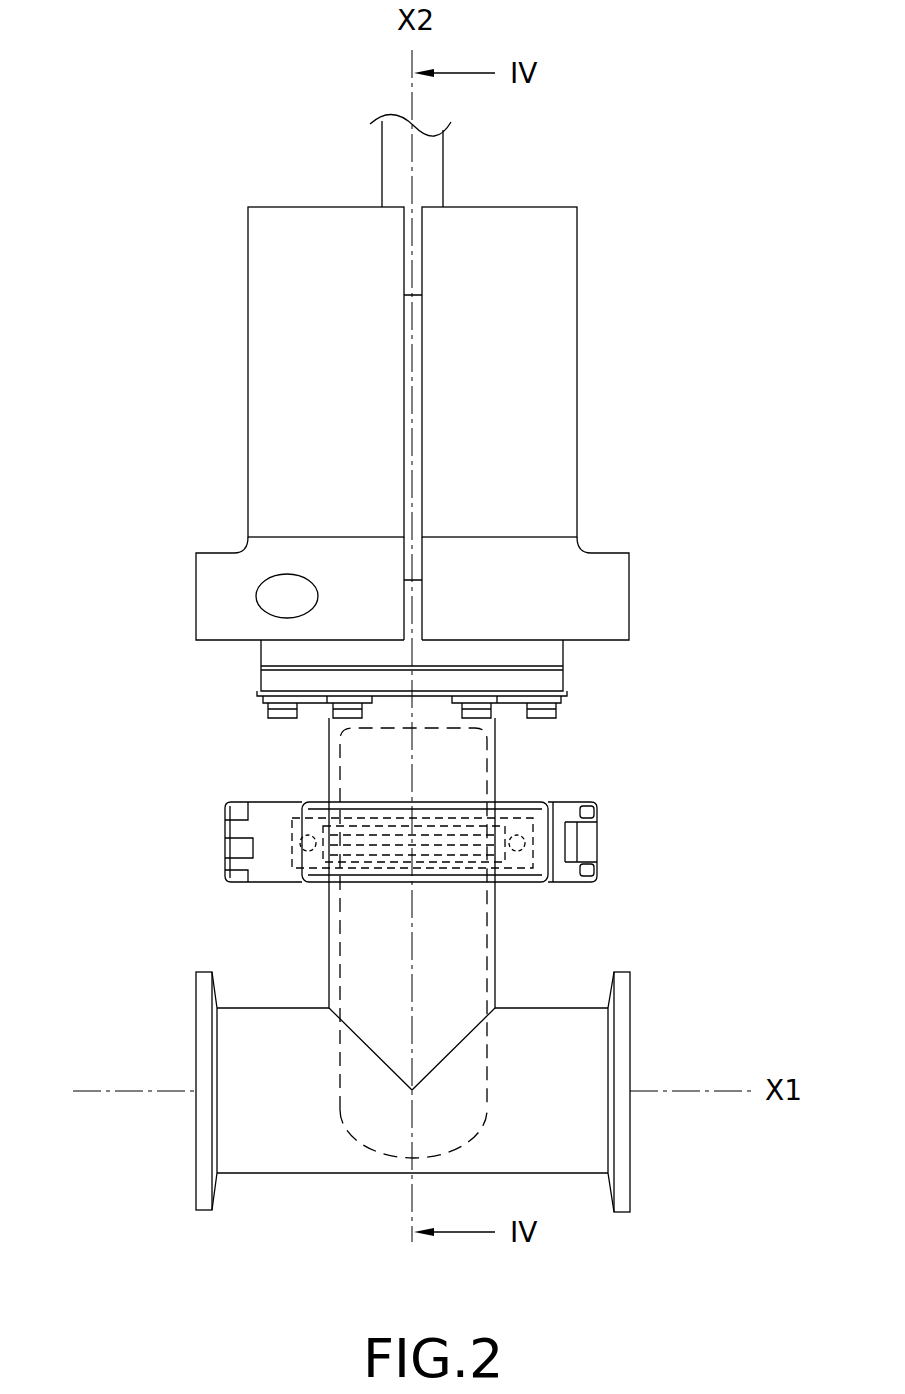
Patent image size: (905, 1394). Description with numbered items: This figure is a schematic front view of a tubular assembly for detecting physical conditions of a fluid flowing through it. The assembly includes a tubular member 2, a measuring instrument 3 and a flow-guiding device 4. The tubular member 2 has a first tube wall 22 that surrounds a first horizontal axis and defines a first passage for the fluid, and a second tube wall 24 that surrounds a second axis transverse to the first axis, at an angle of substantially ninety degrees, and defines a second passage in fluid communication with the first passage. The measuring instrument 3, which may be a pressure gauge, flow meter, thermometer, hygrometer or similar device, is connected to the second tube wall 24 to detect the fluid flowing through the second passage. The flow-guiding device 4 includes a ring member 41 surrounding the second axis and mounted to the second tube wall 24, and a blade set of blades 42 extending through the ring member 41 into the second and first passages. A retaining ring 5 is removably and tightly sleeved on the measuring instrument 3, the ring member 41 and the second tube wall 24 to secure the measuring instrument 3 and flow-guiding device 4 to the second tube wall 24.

The tubular member 2 is at (413, 1129).
The first tube wall 22 is at (280, 1148).
The second tube wall 24 is at (497, 964).
The measuring instrument 3 is at (596, 398).
The flow-guiding device 4 is at (510, 930).
The ring member 41 is at (310, 846).
The blades 42 is at (487, 1069).
The retaining ring 5 is at (362, 831).